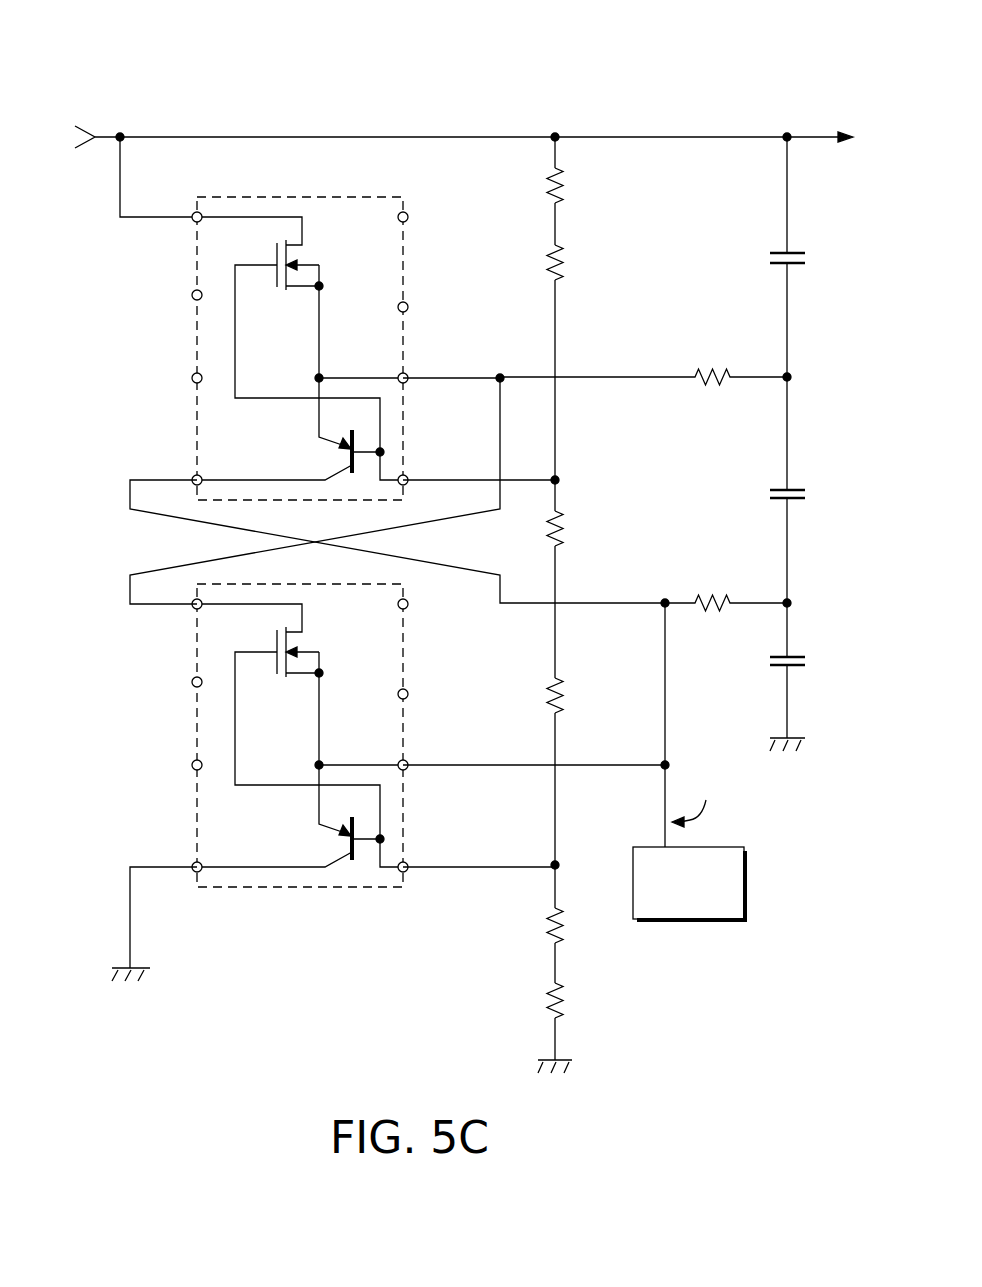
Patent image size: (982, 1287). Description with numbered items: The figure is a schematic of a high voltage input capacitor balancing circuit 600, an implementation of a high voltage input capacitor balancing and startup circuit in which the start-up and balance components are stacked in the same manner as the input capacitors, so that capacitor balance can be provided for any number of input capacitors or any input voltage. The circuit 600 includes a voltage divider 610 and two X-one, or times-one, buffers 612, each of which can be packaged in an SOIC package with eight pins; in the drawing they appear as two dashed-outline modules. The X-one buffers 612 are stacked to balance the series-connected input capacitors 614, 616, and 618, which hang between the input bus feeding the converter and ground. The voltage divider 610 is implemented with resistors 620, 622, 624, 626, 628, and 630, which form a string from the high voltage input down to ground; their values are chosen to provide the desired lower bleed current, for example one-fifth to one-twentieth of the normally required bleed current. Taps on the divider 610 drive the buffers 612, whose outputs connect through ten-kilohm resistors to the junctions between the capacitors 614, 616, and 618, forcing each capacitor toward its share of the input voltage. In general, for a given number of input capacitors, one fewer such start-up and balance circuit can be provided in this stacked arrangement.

The high voltage input capacitor balancing circuit 600 is at (340, 996).
The voltage divider 610 is at (646, 258).
The X1 buffer 612 is at (182, 336).
The input capacitor 614 is at (806, 228).
The input capacitor 616 is at (806, 470).
The input capacitor 618 is at (806, 636).
The resistor 620 is at (618, 182).
The resistor 622 is at (594, 286).
The resistor 624 is at (586, 508).
The resistor 626 is at (574, 676).
The resistor 628 is at (594, 910).
The resistor 630 is at (598, 1030).